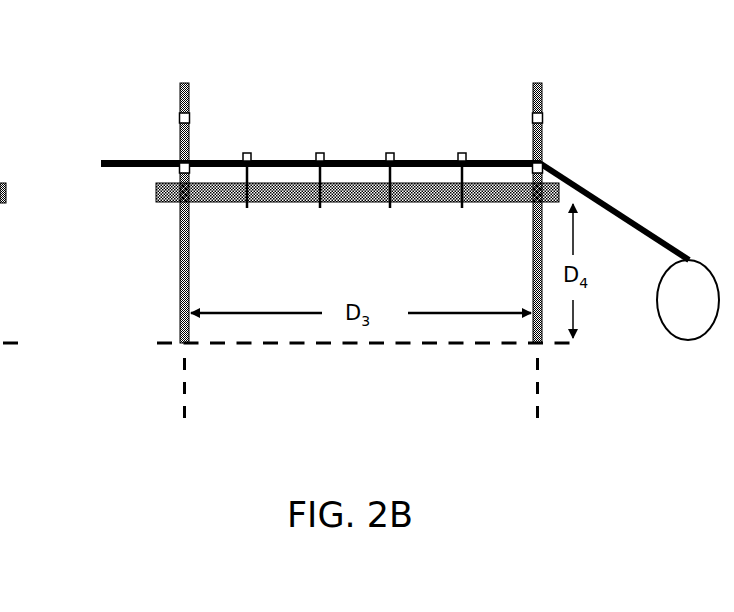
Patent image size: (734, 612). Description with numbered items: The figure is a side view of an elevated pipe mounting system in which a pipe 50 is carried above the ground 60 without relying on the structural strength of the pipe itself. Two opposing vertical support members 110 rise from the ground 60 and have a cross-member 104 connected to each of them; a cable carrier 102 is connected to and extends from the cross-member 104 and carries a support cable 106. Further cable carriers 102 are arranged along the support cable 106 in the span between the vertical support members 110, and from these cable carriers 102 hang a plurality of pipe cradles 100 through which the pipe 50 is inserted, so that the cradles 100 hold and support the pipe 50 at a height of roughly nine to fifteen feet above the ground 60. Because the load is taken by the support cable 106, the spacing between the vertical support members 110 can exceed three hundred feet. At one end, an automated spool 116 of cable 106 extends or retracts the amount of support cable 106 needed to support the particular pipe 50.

The pipe 50 is at (6, 193).
The ground 60 is at (23, 357).
The pipe cradles 100 is at (460, 212).
The cable carriers 102 is at (313, 152).
The cross-member 104 is at (190, 114).
The support cable 106 is at (133, 160).
The vertical support members 110 is at (179, 300).
The automated spool 116 is at (688, 341).